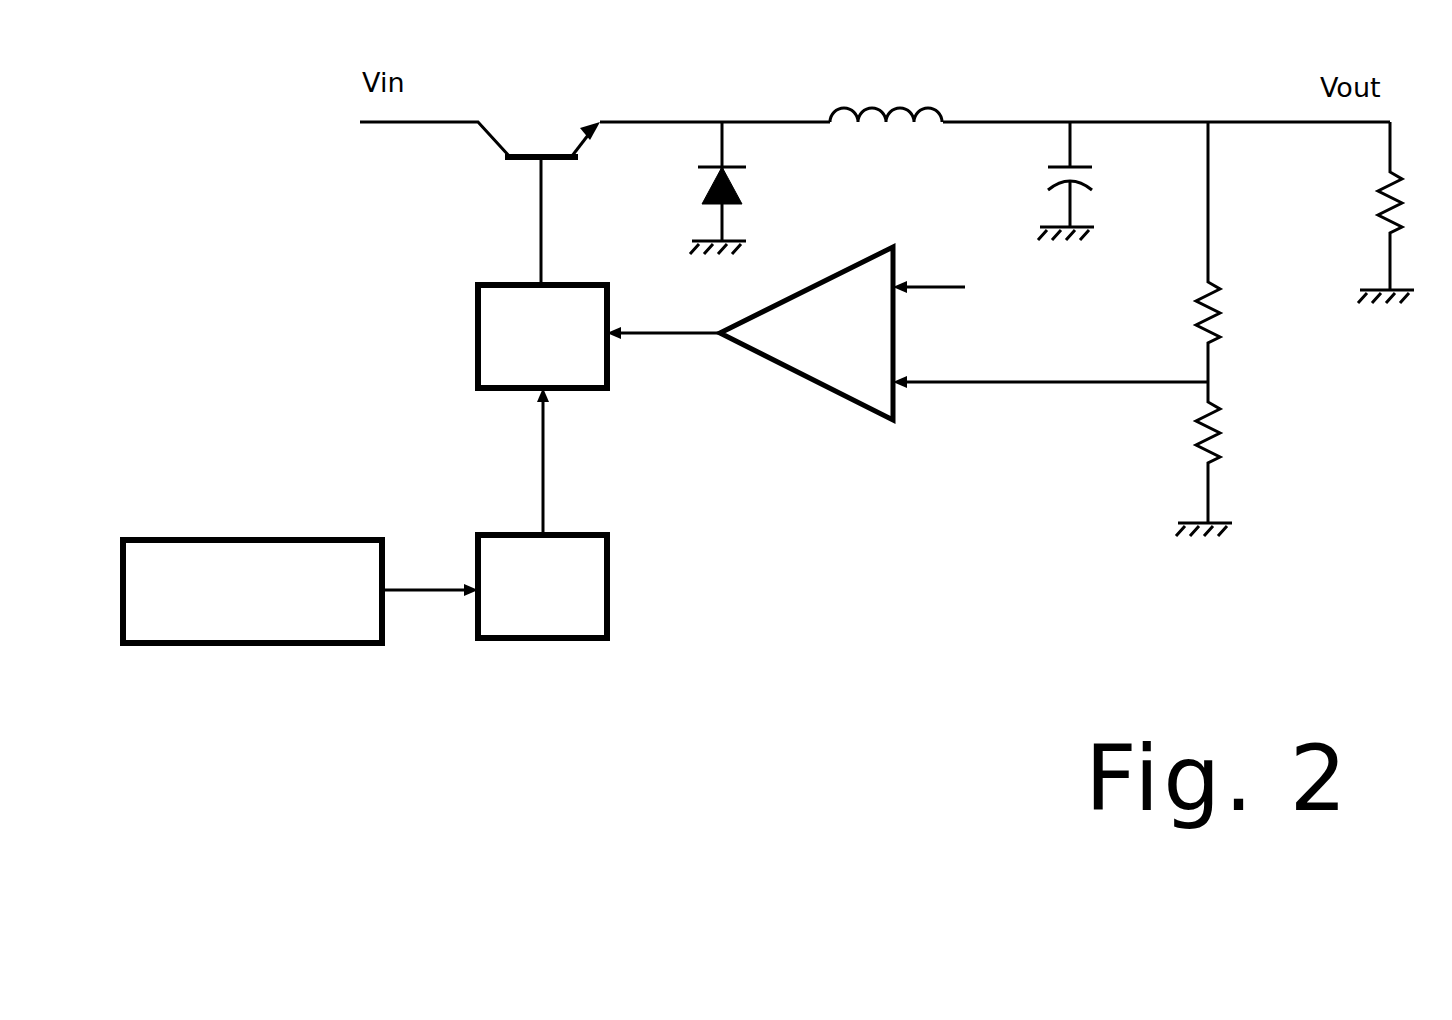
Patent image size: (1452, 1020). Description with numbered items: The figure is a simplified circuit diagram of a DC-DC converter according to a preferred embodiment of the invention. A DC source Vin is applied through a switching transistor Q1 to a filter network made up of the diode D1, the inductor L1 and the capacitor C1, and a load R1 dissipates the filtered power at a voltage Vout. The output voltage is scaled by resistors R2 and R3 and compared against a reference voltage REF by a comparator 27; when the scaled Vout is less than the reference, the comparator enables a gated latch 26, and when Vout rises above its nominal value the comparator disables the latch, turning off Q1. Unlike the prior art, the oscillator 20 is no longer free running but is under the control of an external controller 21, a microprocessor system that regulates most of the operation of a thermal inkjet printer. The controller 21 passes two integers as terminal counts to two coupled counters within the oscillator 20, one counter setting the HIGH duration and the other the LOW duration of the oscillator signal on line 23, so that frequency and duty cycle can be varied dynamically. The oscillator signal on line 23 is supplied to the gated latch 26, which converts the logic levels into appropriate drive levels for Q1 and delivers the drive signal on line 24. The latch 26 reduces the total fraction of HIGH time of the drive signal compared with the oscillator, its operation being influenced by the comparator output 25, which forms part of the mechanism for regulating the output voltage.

The oscillator 20 is at (542, 605).
The external controller 21 is at (300, 609).
The line 23 is at (524, 461).
The line 24 is at (520, 221).
The comparator output 25 is at (663, 347).
The gated latch 26 is at (521, 336).
The comparator 27 is at (872, 348).
The switching transistor Q1 is at (552, 119).
The diode D1 is at (737, 188).
The inductor L1 is at (886, 93).
The capacitor C1 is at (1092, 181).
The load R1 is at (1405, 212).
The scaling resistor R2 is at (1230, 252).
The scaling resistor R3 is at (1220, 459).